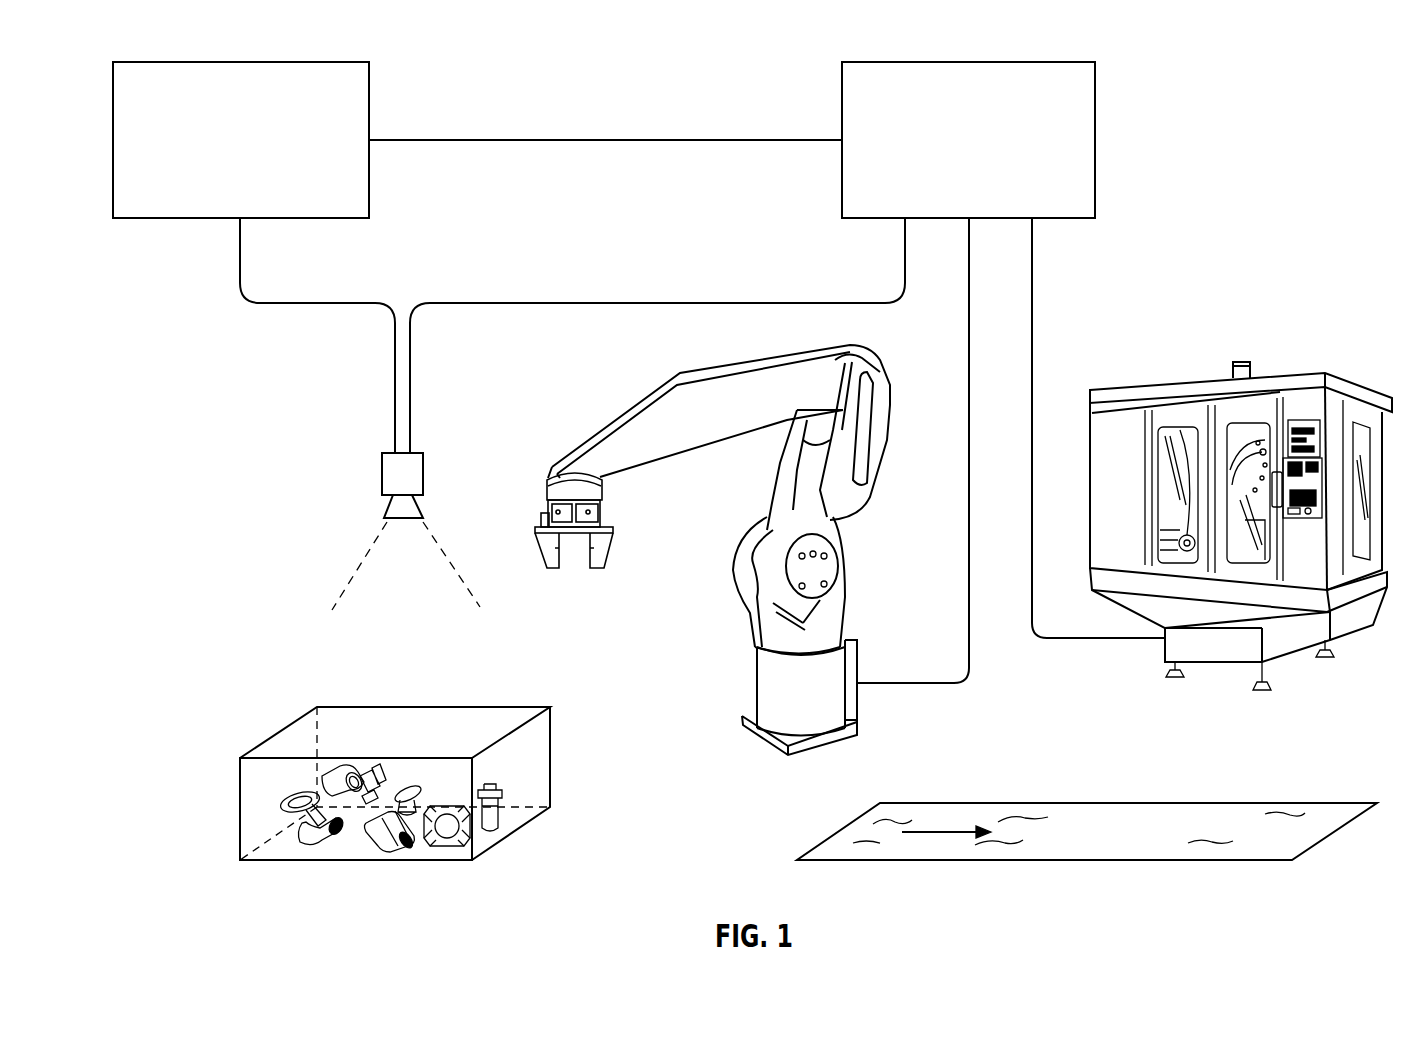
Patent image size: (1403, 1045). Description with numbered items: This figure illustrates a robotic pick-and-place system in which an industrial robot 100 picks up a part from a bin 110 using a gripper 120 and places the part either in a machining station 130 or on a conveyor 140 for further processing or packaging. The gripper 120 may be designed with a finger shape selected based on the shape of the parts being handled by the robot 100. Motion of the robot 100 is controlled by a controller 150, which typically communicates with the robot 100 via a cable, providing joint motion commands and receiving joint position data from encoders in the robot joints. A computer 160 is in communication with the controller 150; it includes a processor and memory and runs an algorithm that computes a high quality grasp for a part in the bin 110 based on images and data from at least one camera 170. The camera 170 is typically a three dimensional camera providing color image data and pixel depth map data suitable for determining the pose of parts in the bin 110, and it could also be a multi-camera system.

The industrial robot 100 is at (748, 667).
The bin 110 is at (336, 706).
The gripper 120 is at (617, 537).
The machining station 130 is at (1296, 352).
The conveyor 140 is at (935, 803).
The controller 150 is at (1057, 62).
The computer 160 is at (329, 62).
The camera 170 is at (393, 453).